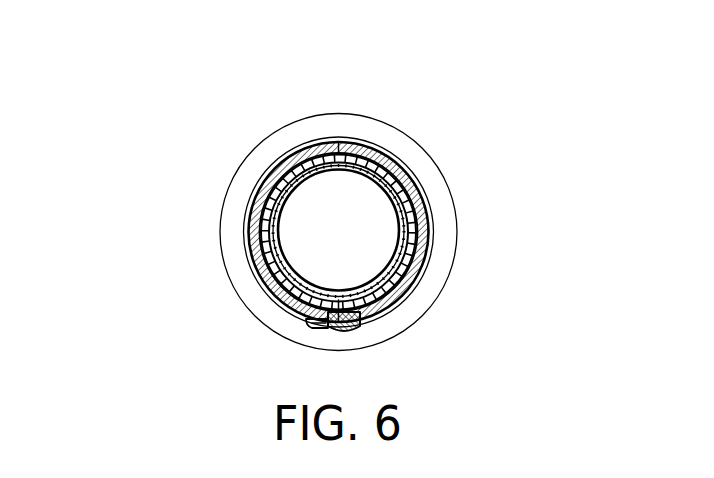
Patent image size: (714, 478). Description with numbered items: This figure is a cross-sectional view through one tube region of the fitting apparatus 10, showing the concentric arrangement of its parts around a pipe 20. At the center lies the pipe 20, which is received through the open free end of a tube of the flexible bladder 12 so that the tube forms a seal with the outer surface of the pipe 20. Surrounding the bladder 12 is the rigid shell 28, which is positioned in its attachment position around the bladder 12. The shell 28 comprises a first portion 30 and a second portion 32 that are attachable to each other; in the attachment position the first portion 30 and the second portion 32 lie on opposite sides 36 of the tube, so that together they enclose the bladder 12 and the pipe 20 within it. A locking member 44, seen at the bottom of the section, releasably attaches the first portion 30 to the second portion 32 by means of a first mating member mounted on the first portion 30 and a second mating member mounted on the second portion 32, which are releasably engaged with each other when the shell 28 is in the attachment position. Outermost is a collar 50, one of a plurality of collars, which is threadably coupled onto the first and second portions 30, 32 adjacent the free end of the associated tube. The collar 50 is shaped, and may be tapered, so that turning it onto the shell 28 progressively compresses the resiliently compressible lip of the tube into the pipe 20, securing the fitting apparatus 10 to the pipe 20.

The fitting apparatus 10 is at (178, 144).
The bladder 12 is at (257, 264).
The pipe 20 is at (340, 300).
The shell 28 is at (358, 96).
The first portion 30 is at (292, 158).
The second portion 32 is at (405, 175).
The opposite sides 36 is at (412, 224).
The locking member 44 is at (347, 346).
The collar 50 is at (442, 252).